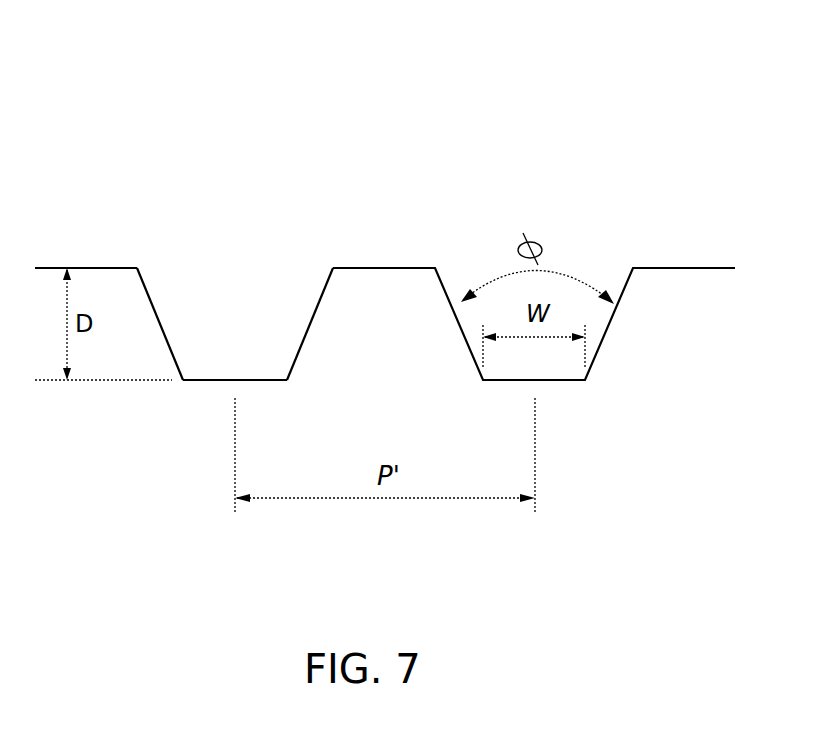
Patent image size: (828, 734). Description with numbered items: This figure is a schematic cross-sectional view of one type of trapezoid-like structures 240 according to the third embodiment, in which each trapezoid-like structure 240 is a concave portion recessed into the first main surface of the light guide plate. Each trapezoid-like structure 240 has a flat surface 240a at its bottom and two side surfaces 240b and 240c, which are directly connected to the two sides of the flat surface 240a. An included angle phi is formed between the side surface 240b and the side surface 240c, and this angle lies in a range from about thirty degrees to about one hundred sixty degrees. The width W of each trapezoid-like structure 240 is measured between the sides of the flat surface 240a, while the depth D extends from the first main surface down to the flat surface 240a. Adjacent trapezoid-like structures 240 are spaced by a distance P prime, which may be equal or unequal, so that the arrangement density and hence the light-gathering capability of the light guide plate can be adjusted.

The trapezoid-like structure 240 is at (193, 110).
The flat surface 240a is at (233, 380).
The side surface 240b is at (148, 292).
The side surface 240c is at (322, 295).